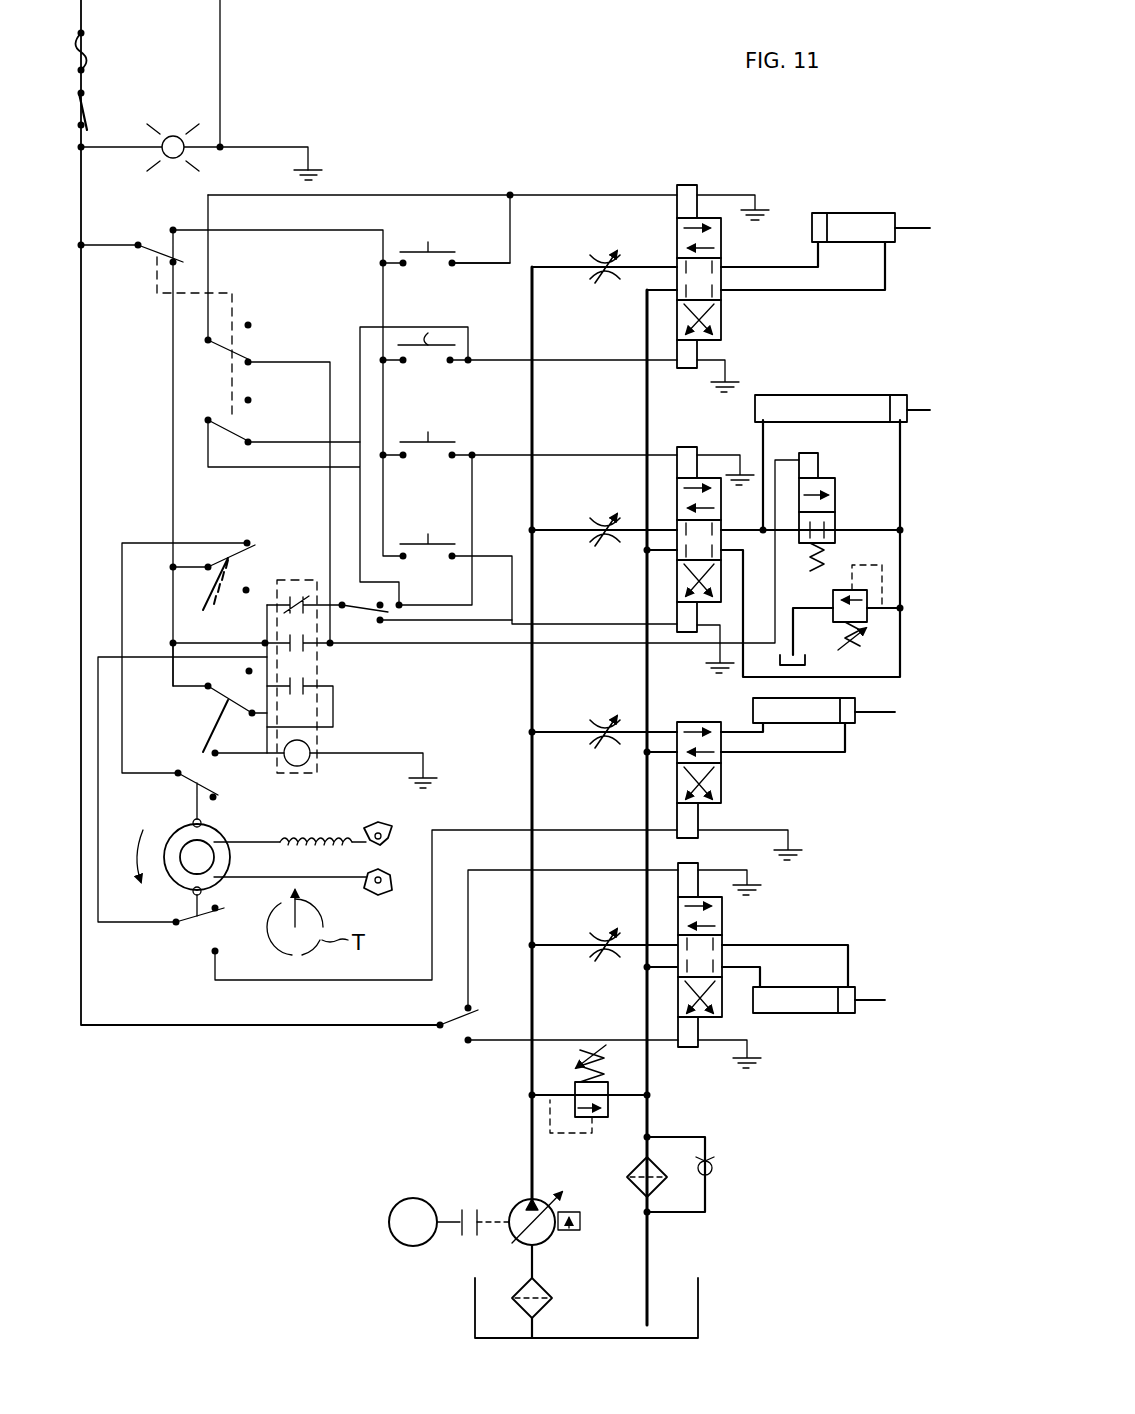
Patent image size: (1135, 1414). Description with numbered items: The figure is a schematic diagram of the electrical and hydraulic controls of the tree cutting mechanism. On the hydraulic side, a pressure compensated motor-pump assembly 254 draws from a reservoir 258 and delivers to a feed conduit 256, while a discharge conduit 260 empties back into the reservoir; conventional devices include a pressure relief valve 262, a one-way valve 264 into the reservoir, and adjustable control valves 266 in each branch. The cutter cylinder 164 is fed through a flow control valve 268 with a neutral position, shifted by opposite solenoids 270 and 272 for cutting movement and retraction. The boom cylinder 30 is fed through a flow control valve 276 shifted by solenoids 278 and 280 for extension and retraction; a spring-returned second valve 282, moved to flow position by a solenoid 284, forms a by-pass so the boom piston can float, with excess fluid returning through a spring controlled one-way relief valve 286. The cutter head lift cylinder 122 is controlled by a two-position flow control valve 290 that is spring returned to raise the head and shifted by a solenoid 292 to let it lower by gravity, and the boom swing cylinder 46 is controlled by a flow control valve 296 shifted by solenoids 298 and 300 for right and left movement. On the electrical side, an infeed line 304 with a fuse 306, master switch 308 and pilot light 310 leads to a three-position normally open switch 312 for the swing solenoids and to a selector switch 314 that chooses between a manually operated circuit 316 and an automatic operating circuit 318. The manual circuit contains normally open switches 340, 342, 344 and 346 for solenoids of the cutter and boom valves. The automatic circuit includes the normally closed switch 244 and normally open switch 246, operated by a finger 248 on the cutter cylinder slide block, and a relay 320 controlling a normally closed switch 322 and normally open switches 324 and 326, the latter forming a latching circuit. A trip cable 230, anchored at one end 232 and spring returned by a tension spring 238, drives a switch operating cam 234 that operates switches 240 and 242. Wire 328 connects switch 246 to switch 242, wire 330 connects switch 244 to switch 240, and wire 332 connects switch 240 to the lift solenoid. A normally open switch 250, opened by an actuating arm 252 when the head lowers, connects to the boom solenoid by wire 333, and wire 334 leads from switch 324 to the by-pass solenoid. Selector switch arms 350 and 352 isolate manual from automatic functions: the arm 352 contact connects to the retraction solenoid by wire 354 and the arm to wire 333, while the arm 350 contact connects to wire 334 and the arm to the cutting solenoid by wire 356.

The infeed line 304 is at (84, 14).
The fuse 306 is at (90, 62).
The master switch 308 is at (88, 106).
The pilot light 310 is at (179, 136).
The selector switch 314 is at (145, 262).
The manually operated circuit 316 is at (382, 297).
The automatic operating circuit 318 is at (172, 468).
The switch arm 350 is at (240, 352).
The switch arm 352 is at (222, 422).
The wire 356 is at (433, 192).
The manually operated switch 340 is at (442, 250).
The manually operated switch 342 is at (428, 347).
The manually operated switch 344 is at (444, 440).
The manually operated switch 346 is at (444, 540).
The wire 354 is at (440, 340).
The wire 333 is at (573, 453).
The wire 334 is at (478, 645).
The wire 328 is at (140, 543).
The wire 330 is at (103, 657).
The wire 332 is at (490, 828).
The normally open switch 246 is at (230, 553).
The finger 248 is at (236, 584).
The normally closed switch 244 is at (230, 690).
The switch 242 is at (203, 779).
The normally closed switch 322 is at (297, 580).
The normally open switch 324 is at (305, 648).
The normally open switch 326 is at (318, 690).
The relay 320 is at (317, 753).
The normally open switch 250 is at (378, 614).
The actuating arm 252 is at (366, 612).
The switch operating cam 234 is at (178, 832).
The tension spring 238 is at (326, 838).
The trip cable 230 is at (310, 876).
The end 232 is at (392, 878).
The switch 240 is at (188, 926).
The three-position, normally open switch 312 is at (470, 1017).
The feed conduit 256 is at (530, 1070).
The discharge conduit 260 is at (652, 1072).
The pressure relief valve 262 is at (600, 1120).
The one-way valve 264 is at (710, 1153).
The motor-pump assembly 254 is at (496, 1210).
The reservoir 258 is at (475, 1306).
The adjustable control valves 266 is at (615, 281).
The solenoid 270 is at (685, 185).
The flow control valve 268 is at (677, 228).
The solenoid 272 is at (700, 355).
The cutter cylinder 164 is at (860, 213).
The flow control valve 276 is at (677, 490).
The solenoid 278 is at (688, 447).
The solenoid 280 is at (677, 614).
The boom cylinder 30 is at (860, 395).
The solenoid 284 is at (820, 463).
The second valve 282 is at (836, 525).
The spring controlled one-way relief valve 286 is at (834, 600).
The flow control valve 290 is at (722, 783).
The solenoid 292 is at (700, 826).
The cutter head lift cylinder 122 is at (828, 723).
The flow control valve 296 is at (722, 915).
The solenoid 298 is at (678, 880).
The solenoid 300 is at (678, 1034).
The boom swing cylinder 46 is at (806, 987).